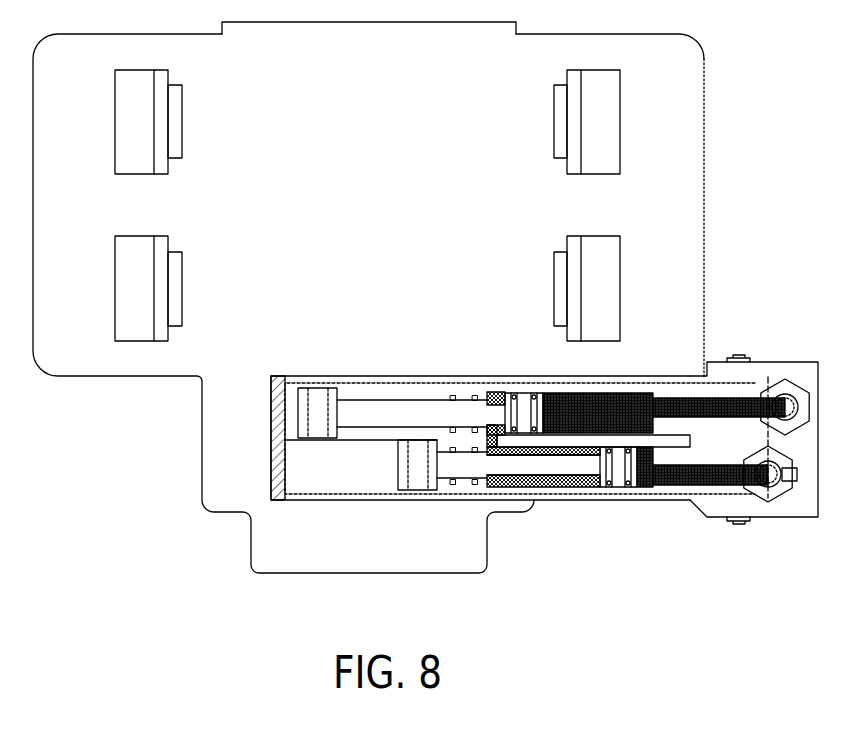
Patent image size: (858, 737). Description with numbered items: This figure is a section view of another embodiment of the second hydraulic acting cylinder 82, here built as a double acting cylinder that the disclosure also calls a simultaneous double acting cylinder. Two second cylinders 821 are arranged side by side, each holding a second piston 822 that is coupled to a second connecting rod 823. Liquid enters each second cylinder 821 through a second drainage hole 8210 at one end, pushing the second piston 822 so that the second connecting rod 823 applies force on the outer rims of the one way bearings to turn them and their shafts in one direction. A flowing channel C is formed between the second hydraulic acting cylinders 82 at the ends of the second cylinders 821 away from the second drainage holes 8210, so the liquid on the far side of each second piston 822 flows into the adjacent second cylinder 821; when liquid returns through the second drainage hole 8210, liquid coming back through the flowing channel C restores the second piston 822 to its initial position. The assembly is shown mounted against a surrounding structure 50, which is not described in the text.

The base body 50 is at (678, 152).
The second hydraulic acting cylinder 82 is at (667, 380).
The second cylinder 821 is at (642, 393).
The second piston 822 is at (525, 407).
The second connecting rod 823 is at (370, 415).
The second drainage hole 8210 is at (737, 405).
The flowing channel C is at (485, 438).